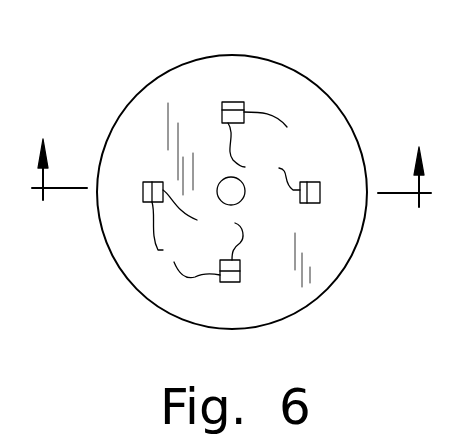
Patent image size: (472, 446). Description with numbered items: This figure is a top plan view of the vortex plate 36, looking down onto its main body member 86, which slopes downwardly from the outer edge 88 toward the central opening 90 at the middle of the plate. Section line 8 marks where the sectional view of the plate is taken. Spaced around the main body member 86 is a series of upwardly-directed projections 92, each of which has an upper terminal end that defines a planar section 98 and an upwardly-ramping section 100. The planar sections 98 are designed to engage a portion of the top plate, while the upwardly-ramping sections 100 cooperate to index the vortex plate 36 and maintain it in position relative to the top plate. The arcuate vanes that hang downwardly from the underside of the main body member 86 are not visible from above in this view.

The section line 8- 8 is at (237, 145).
The vortex plate 36 is at (145, 77).
The main body member 86 is at (301, 107).
The outer edge 88 is at (351, 273).
The central opening 90 is at (232, 190).
The upwardly-directed projections 92 is at (224, 195).
The planar section 98 is at (231, 191).
The upwardly-ramping section 100 is at (248, 305).